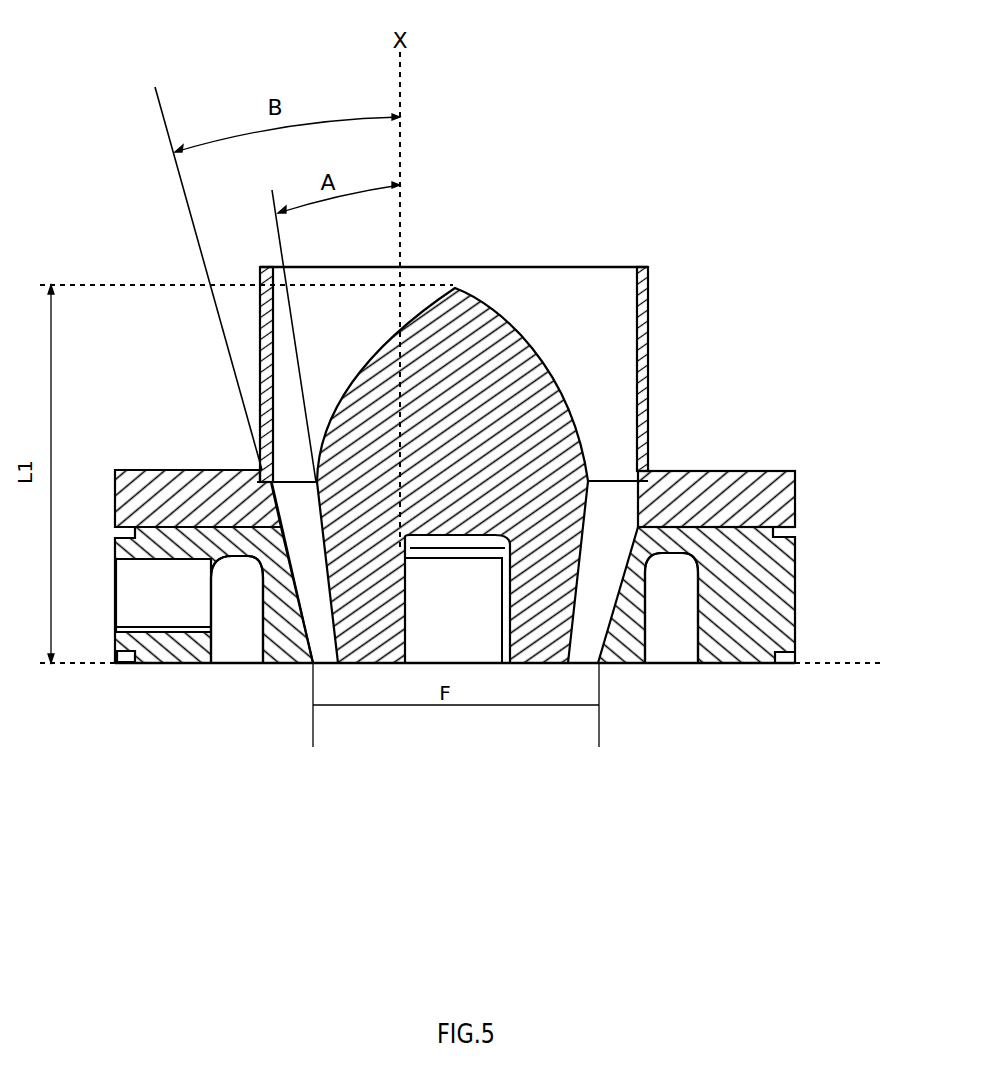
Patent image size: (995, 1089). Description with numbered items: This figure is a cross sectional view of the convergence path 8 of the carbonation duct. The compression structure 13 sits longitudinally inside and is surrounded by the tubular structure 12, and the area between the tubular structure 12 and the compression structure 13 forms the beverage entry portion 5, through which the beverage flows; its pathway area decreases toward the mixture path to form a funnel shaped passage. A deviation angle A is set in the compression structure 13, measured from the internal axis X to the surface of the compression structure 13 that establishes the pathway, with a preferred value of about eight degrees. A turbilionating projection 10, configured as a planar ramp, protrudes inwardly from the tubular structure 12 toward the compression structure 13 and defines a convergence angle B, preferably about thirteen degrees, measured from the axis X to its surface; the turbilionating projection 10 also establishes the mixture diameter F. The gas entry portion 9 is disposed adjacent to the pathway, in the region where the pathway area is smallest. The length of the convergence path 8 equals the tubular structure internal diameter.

The beverage entry portion 5 is at (385, 375).
The convergence path 8 is at (640, 176).
The gas entry portion 9 is at (454, 608).
The turbilionating projection 10 is at (275, 665).
The tubular structure 12 is at (185, 483).
The compression structure 13 is at (495, 377).